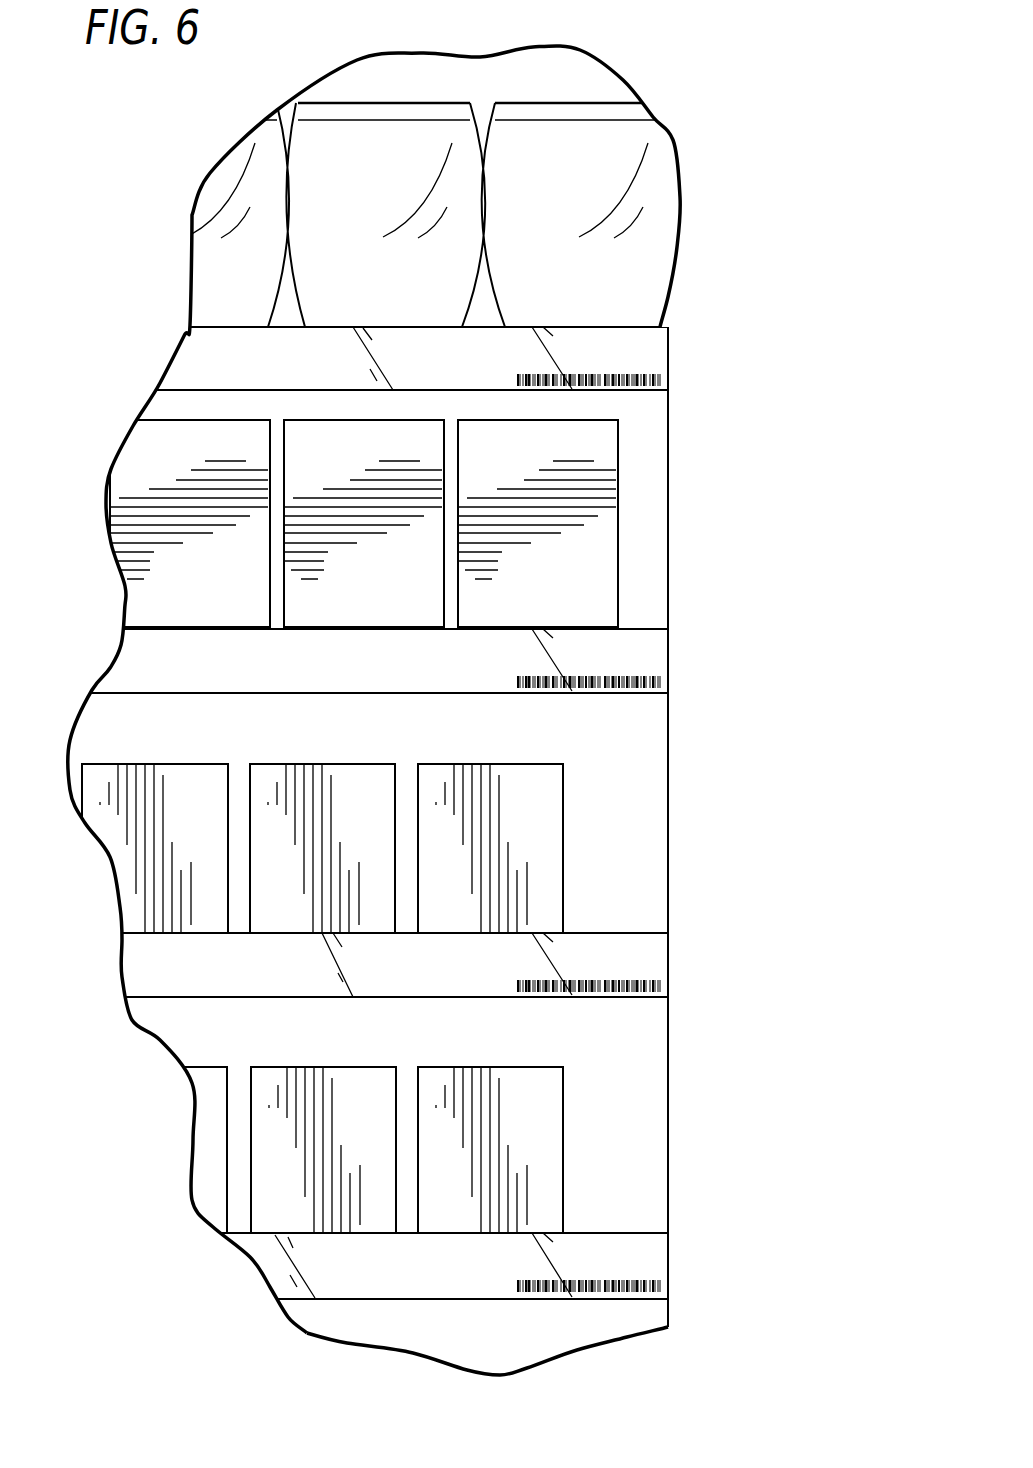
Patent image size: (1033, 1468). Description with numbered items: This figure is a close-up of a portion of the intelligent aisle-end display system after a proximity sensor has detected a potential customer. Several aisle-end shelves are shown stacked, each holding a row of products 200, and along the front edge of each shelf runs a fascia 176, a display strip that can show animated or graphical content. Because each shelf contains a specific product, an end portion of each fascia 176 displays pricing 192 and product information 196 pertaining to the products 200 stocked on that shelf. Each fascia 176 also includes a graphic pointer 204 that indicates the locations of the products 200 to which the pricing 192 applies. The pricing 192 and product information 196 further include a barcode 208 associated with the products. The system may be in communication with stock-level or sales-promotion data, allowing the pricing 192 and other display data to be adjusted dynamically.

The fascia 176 is at (303, 353).
The graphic pointer 204 is at (307, 648).
The barcode 208 is at (651, 372).
The pricing 192 is at (645, 642).
The product information 196 is at (553, 938).
The products 200 is at (563, 1150).